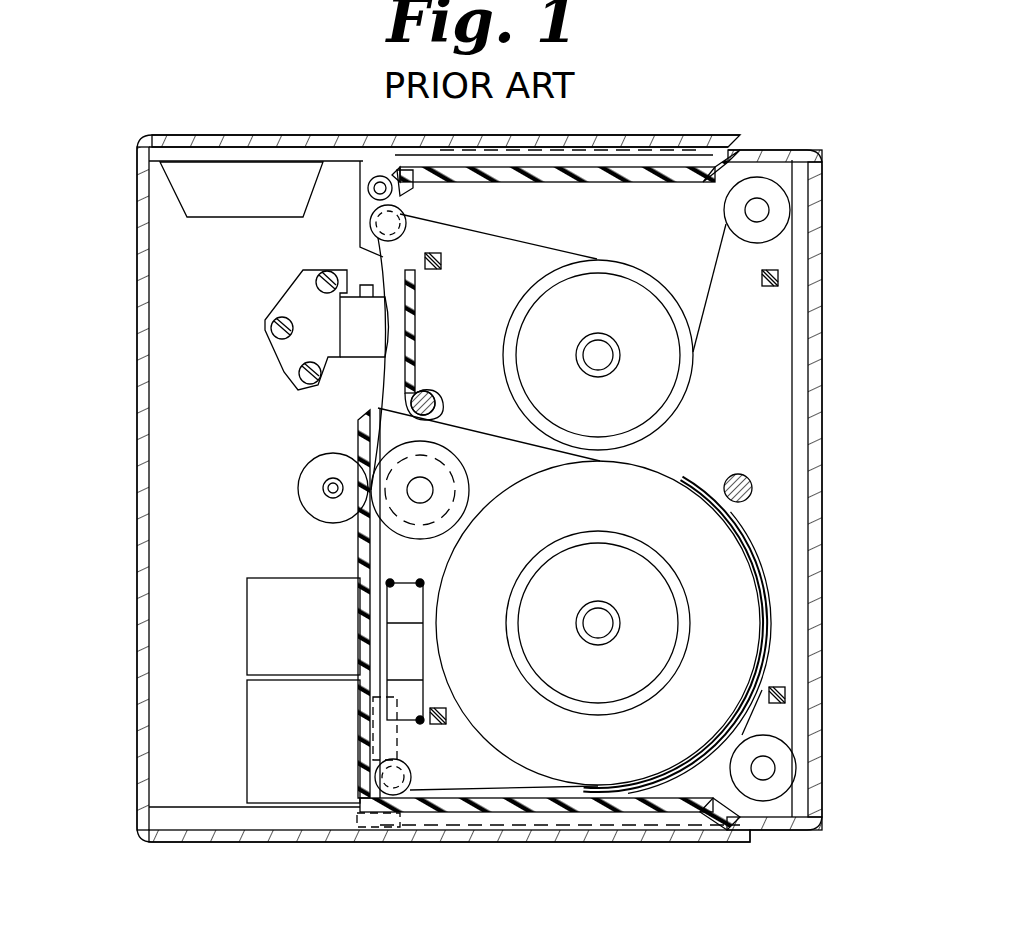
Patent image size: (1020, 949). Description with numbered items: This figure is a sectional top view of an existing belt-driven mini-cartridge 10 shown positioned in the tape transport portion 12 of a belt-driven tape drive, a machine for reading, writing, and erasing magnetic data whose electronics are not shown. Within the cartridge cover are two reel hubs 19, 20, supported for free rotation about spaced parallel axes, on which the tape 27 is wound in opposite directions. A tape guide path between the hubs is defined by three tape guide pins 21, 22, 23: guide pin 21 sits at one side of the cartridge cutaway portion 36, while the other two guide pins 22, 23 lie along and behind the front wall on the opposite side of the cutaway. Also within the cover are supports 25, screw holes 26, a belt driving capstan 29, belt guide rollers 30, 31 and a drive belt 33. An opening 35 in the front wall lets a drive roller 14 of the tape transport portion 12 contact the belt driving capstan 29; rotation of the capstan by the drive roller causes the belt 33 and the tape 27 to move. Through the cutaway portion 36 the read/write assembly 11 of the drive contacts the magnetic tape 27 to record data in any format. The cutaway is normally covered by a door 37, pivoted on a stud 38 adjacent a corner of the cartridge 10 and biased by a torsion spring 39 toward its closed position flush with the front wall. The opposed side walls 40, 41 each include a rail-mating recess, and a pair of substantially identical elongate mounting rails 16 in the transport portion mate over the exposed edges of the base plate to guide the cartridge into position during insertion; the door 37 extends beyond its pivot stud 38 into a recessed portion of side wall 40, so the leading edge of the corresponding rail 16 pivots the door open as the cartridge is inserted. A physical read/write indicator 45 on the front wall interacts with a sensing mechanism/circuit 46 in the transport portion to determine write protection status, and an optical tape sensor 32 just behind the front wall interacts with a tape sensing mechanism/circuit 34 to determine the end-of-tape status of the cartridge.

The mini-cartridge 10 is at (728, 428).
The read/write assembly 11 is at (277, 303).
The tape transport portion 12 is at (168, 517).
The drive roller 14 is at (307, 512).
The elongate mounting rails 16 is at (585, 160).
The reel hub 19 is at (685, 630).
The reel hub 20 is at (662, 427).
The tape guide pin 21 is at (403, 210).
The tape guide pin 22 is at (375, 408).
The tape guide pin 23 is at (420, 785).
The supports 25 is at (447, 263).
The screw holes 26 is at (440, 405).
The tape 27 is at (378, 384).
The belt driving capstan 29 is at (352, 555).
The belt guide roller 30 is at (788, 210).
The belt guide roller 31 is at (785, 770).
The optical tape sensor 32 is at (395, 615).
The drive belt 33 is at (700, 322).
The tape sensing mechanism/circuit 34 is at (270, 650).
The opening 35 is at (365, 448).
The cutaway portion 36 is at (390, 332).
The door 37 is at (212, 195).
The stud 38 is at (370, 195).
The torsion spring 39 is at (380, 176).
The side wall 40 is at (663, 160).
The side wall 41 is at (490, 810).
The physical read/write indicator 45 is at (390, 735).
The sensing mechanism/circuit 46 is at (275, 755).